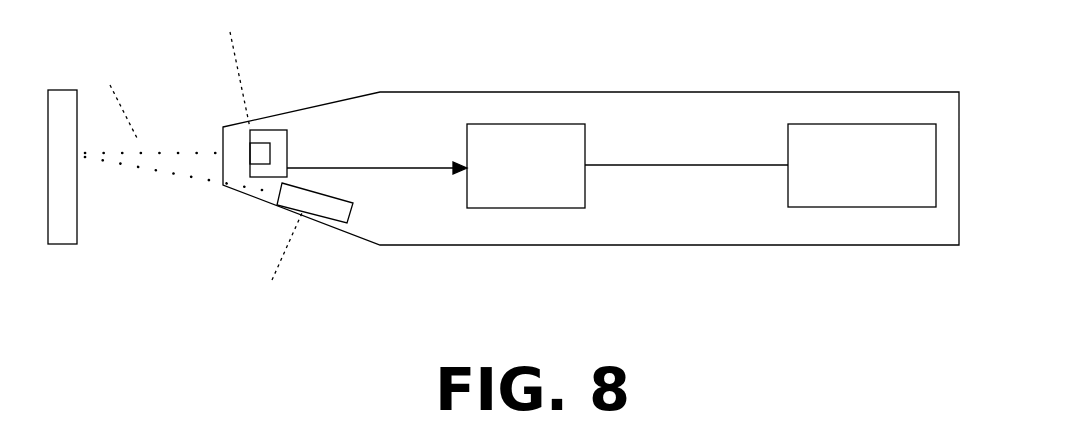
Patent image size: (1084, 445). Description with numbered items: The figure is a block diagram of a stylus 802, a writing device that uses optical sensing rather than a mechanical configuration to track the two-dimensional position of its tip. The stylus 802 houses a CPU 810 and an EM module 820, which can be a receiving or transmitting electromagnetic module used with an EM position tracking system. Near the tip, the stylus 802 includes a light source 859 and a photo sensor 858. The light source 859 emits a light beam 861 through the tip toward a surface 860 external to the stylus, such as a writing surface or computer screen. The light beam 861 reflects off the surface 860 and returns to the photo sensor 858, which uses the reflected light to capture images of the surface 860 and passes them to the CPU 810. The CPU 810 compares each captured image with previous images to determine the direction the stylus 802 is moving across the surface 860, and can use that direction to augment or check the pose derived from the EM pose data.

The stylus 802 is at (752, 92).
The CPU 810 is at (534, 122).
The EM module 820 is at (885, 123).
The photo sensor 858 is at (280, 130).
The light source 859 is at (340, 228).
The surface 860 is at (58, 248).
The light beam 861 is at (141, 178).